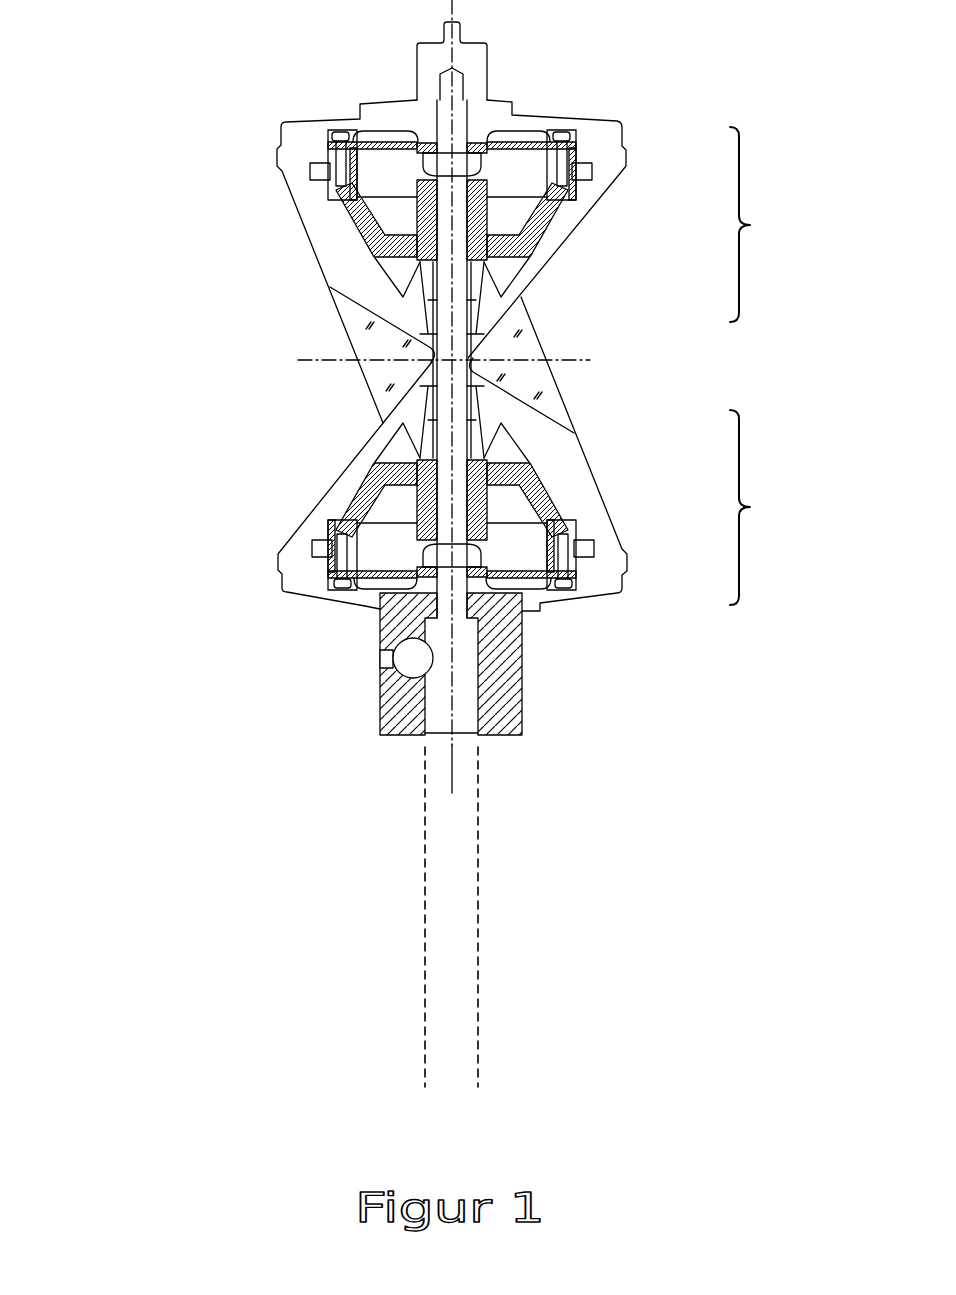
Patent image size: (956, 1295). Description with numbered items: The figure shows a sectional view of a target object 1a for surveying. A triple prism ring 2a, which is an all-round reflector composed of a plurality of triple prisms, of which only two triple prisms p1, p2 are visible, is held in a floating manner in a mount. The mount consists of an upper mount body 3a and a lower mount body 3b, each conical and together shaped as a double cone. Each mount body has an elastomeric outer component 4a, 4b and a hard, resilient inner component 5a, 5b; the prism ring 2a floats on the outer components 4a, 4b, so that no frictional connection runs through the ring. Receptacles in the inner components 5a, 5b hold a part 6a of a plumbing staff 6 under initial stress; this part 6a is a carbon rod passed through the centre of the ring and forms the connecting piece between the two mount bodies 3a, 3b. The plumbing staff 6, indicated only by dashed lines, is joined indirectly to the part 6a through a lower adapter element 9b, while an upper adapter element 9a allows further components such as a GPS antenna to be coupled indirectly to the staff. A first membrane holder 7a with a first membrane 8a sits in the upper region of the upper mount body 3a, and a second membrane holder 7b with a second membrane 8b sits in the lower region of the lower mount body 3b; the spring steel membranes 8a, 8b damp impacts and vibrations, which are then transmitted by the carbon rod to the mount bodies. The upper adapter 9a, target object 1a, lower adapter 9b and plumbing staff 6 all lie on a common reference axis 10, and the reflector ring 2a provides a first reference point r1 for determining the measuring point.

The target object 1a is at (430, 384).
The triple prism ring 2a is at (446, 355).
The upper mount body 3a is at (561, 170).
The lower mount body 3b is at (509, 574).
The elastomeric outer component 4a is at (307, 208).
The elastomeric outer component 4b is at (573, 492).
The hard and resilient component 5a is at (567, 231).
The hard and resilient component 5b is at (362, 492).
The part of plumbing staff 6a is at (443, 315).
The first membrane holder 7a is at (527, 167).
The second membrane holder 7b is at (375, 547).
The first membrane 8a is at (527, 138).
The second membrane 8b is at (395, 576).
The upper adapter element 9a is at (433, 65).
The lower adapter element 9b is at (503, 703).
The reference axis 10 is at (450, 773).
The plumbing staff 6 is at (490, 873).
The triple prism p1 is at (362, 303).
The triple prism p2 is at (520, 313).
The first reference point r1 is at (425, 364).